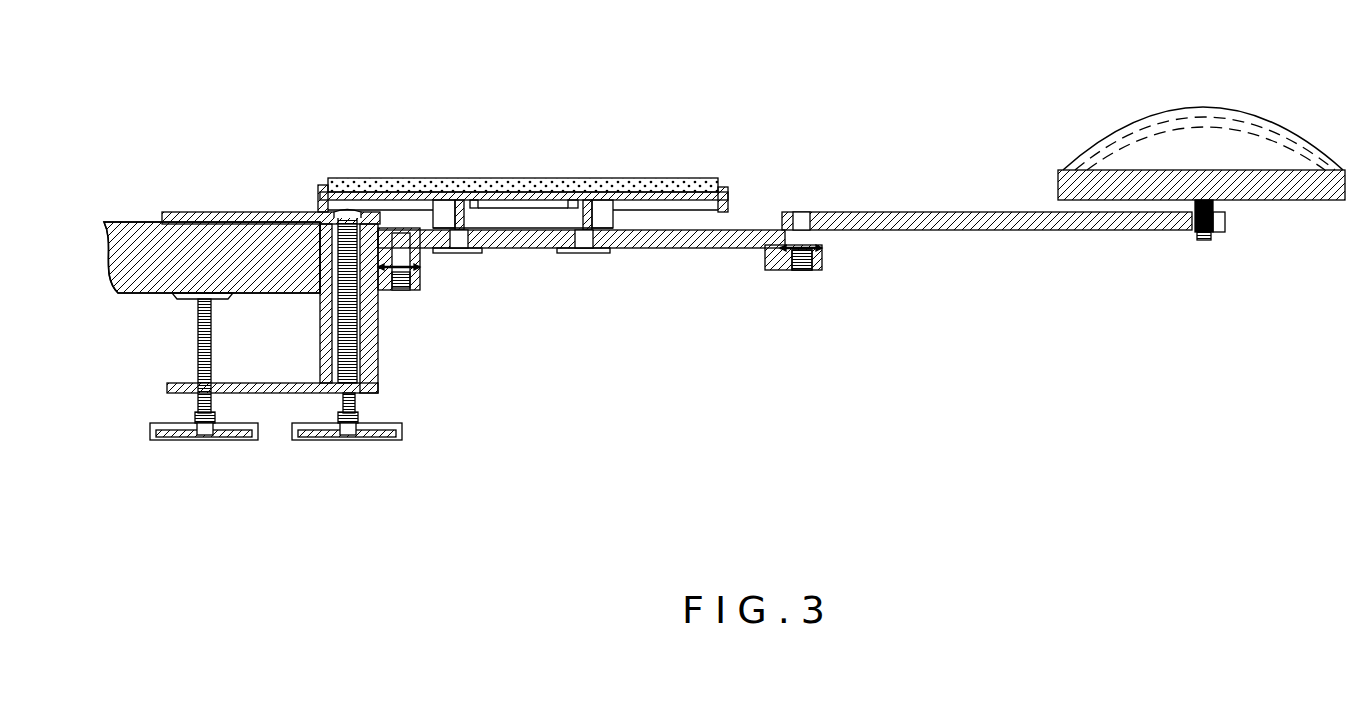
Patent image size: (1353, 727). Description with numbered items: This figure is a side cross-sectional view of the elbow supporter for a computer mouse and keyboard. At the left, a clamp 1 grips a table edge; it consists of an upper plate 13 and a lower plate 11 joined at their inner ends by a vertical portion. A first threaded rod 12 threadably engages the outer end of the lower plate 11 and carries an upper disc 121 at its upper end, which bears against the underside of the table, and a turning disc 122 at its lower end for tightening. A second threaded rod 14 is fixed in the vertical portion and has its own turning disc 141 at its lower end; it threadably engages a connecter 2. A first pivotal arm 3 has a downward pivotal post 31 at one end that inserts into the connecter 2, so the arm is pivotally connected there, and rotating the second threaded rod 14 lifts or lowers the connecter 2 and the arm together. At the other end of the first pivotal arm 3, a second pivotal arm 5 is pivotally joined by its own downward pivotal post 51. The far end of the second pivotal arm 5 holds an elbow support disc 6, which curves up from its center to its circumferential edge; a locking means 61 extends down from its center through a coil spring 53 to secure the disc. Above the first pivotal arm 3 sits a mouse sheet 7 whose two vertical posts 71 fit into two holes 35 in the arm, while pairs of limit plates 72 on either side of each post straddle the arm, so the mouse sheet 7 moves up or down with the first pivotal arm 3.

The clamp 1 is at (229, 376).
The lower plate 11 is at (273, 395).
The first threaded rod 12 is at (142, 429).
The upper disc 121 is at (195, 297).
The turning disc 122 is at (204, 488).
The upper plate 13 is at (226, 212).
The second threaded rod 14 is at (348, 342).
The turning disc 141 is at (340, 441).
The connecter 2 is at (369, 292).
The first pivotal arm 3 is at (724, 249).
The pivotal post 31 is at (402, 291).
The holes 35 is at (608, 243).
The second pivotal arm 5 is at (923, 212).
The pivotal post 51 is at (803, 271).
The coil spring 53 is at (1226, 222).
The elbow support disc 6 is at (1193, 107).
The locking means 61 is at (1205, 242).
The mouse sheet 7 is at (550, 183).
The vertical posts 71 is at (535, 345).
The limit plates 72 is at (483, 218).